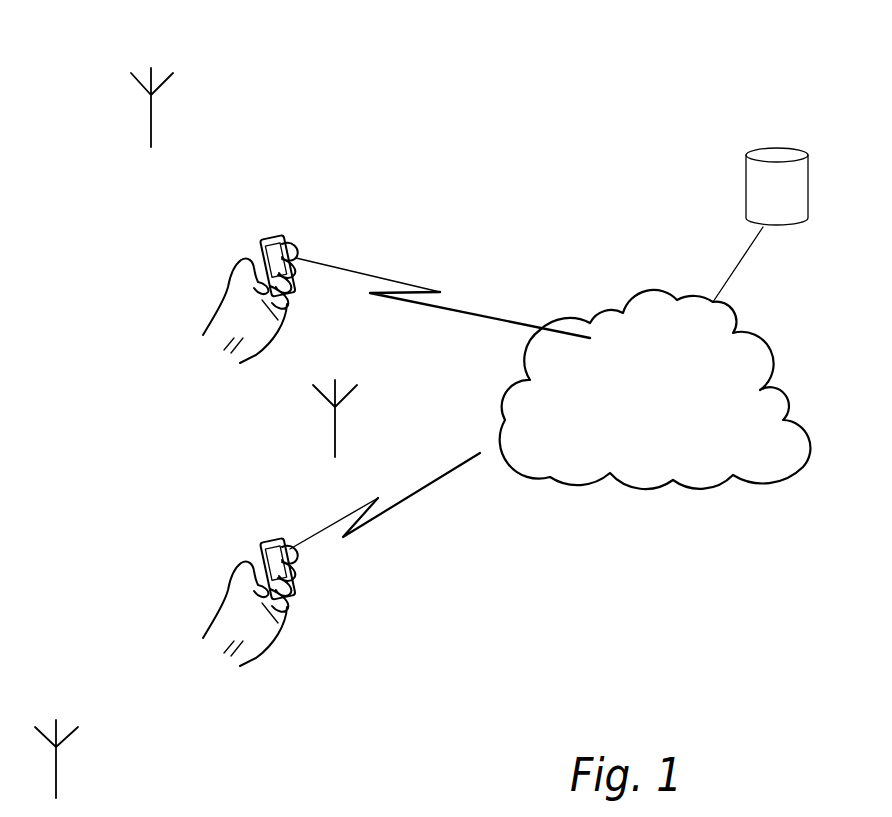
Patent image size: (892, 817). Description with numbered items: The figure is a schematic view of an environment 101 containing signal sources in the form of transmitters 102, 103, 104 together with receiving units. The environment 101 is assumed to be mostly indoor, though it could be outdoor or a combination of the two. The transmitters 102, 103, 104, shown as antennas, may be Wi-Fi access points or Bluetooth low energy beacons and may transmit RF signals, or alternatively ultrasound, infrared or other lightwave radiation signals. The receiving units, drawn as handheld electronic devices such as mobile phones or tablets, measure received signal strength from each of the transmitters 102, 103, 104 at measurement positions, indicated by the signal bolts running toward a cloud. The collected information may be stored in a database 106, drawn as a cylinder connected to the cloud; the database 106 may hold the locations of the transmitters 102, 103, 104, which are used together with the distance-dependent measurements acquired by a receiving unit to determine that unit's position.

The environment 101 is at (545, 98).
The transmitter 102 is at (151, 117).
The transmitter 103 is at (335, 433).
The transmitter 104 is at (56, 769).
The database 106 is at (750, 193).